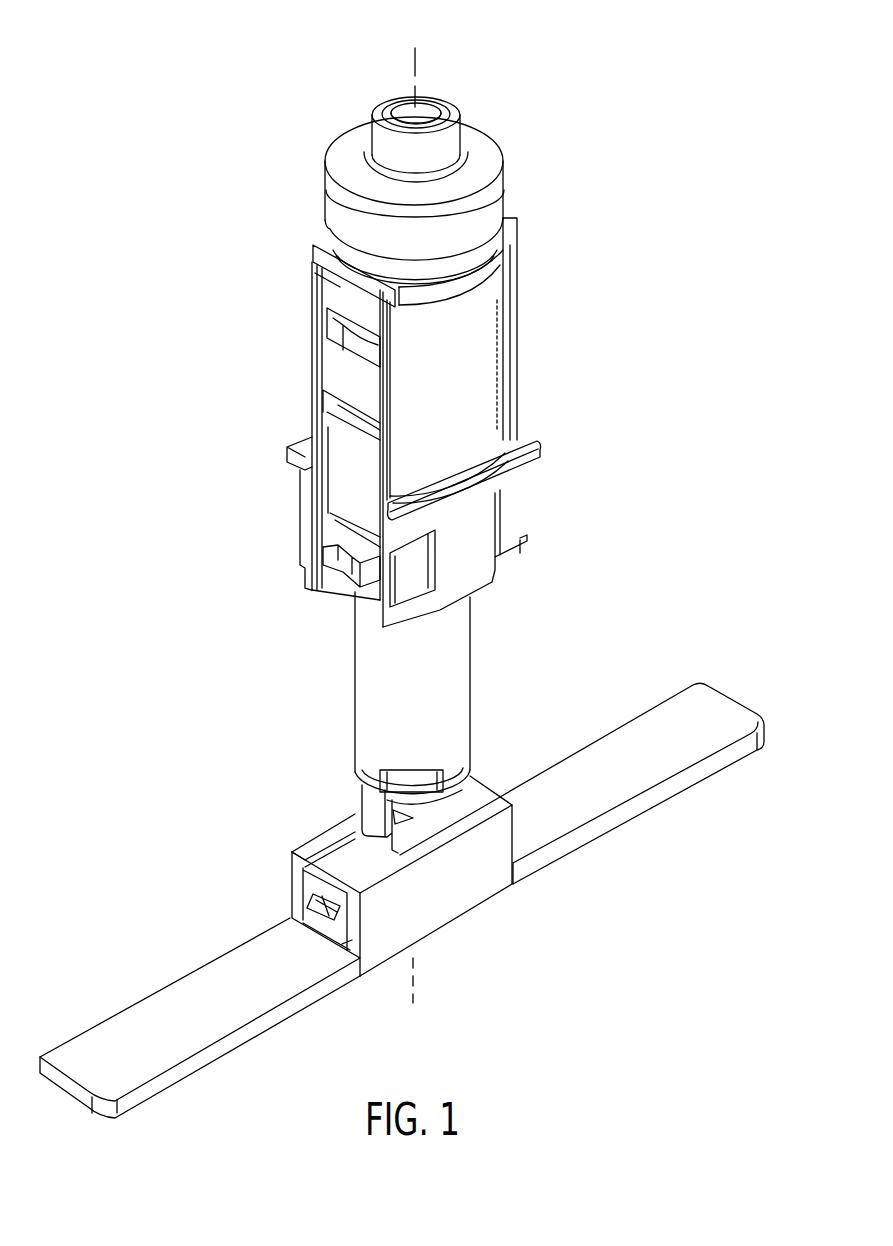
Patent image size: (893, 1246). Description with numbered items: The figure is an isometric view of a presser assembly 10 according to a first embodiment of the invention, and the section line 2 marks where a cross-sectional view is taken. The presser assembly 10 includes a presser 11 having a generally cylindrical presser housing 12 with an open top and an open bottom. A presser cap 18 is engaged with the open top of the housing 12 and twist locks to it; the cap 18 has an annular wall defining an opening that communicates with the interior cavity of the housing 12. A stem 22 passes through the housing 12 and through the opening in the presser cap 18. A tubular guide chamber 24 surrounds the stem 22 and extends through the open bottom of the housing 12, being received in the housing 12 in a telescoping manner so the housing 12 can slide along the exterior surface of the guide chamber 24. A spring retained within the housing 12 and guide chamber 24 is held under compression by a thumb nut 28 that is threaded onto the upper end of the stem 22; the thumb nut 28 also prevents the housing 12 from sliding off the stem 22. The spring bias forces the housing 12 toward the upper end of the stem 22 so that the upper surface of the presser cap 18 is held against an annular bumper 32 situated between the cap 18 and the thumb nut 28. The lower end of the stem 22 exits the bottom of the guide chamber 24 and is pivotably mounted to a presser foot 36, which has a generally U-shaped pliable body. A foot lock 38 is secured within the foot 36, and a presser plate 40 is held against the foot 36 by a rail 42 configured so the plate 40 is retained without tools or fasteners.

The presser assembly 10 is at (210, 131).
The presser 11 is at (612, 461).
The presser housing 12 is at (480, 359).
The presser cap 18 is at (480, 253).
The stem 22 is at (371, 803).
The guide chamber 24 is at (444, 673).
The thumb nut 28 is at (489, 203).
The annular bumper 32 is at (398, 264).
The presser foot 36 is at (312, 882).
The foot lock 38 is at (332, 895).
The presser plate 40 is at (143, 1033).
The rail 42 is at (465, 883).
The section line 2- 2 is at (415, 48).